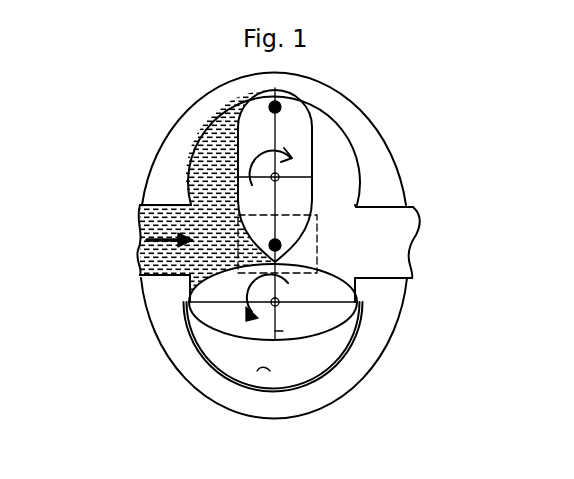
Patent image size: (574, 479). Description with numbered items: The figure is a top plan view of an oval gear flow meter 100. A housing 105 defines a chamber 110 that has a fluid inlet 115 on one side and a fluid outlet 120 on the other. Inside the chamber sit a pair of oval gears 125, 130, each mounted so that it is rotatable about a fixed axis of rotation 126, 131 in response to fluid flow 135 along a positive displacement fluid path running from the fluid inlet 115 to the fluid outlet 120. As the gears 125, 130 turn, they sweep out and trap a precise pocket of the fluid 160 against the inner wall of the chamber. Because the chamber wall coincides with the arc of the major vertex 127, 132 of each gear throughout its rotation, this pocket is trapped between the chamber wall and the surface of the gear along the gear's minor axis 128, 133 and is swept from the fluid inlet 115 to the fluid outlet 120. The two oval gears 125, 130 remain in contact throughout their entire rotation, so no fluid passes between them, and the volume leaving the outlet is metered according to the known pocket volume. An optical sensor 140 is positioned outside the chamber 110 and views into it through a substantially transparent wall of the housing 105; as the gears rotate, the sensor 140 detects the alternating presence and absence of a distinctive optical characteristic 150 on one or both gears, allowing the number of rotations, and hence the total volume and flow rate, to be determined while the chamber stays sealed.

The oval gear flow meter 100 is at (137, 117).
The housing 105 is at (158, 185).
The chamber 110 is at (220, 367).
The fluid inlet 115 is at (155, 278).
The fluid outlet 120 is at (390, 279).
The oval gear 125 is at (310, 138).
The fixed axis of rotation 126 is at (242, 182).
The major vertex 127 is at (272, 172).
The minor axis 128 is at (300, 140).
The oval gear 130 is at (335, 312).
The fixed axis of rotation 131 is at (281, 307).
The major vertex 132 is at (193, 310).
The minor axis 133 is at (283, 331).
The fluid flow 135 is at (128, 207).
The optical sensor 140 is at (340, 228).
The distinctive optical characteristic 150 is at (277, 107).
The fluid 160 is at (263, 370).